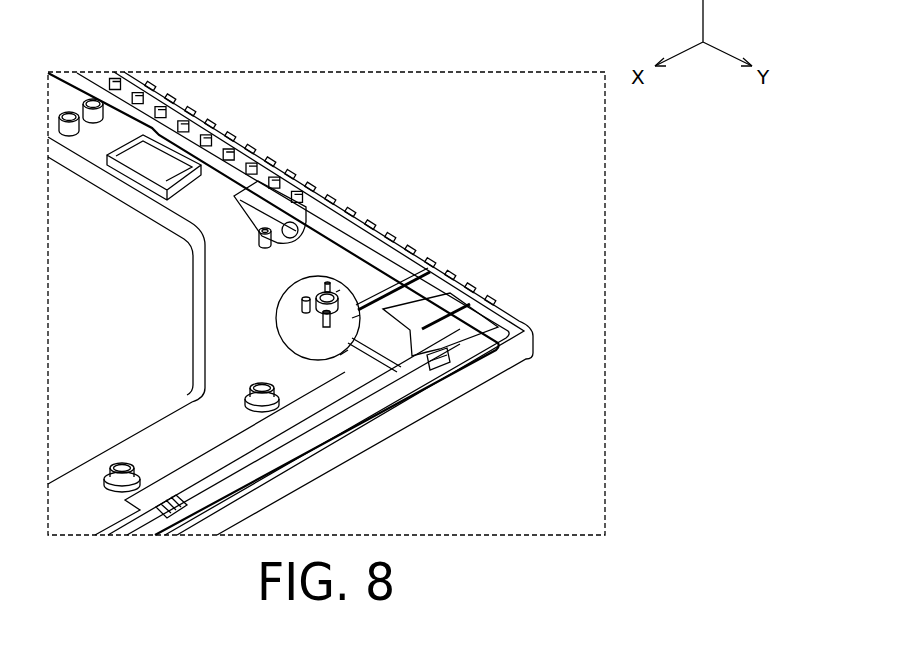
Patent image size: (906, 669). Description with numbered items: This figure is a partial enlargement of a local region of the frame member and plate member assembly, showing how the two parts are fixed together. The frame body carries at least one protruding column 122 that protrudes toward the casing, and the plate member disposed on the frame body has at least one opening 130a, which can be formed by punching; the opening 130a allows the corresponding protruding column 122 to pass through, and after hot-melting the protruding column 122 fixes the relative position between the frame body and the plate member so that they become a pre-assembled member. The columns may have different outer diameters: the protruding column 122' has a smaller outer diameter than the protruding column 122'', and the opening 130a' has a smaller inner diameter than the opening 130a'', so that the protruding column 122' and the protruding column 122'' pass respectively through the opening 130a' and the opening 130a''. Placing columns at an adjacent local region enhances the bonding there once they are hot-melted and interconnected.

The protruding column 122 is at (311, 192).
The opening 130a is at (356, 265).
The protruding column 122' is at (433, 313).
The protruding column 122'' is at (422, 262).
The opening 130a'' is at (457, 290).
The opening 130a' is at (425, 407).